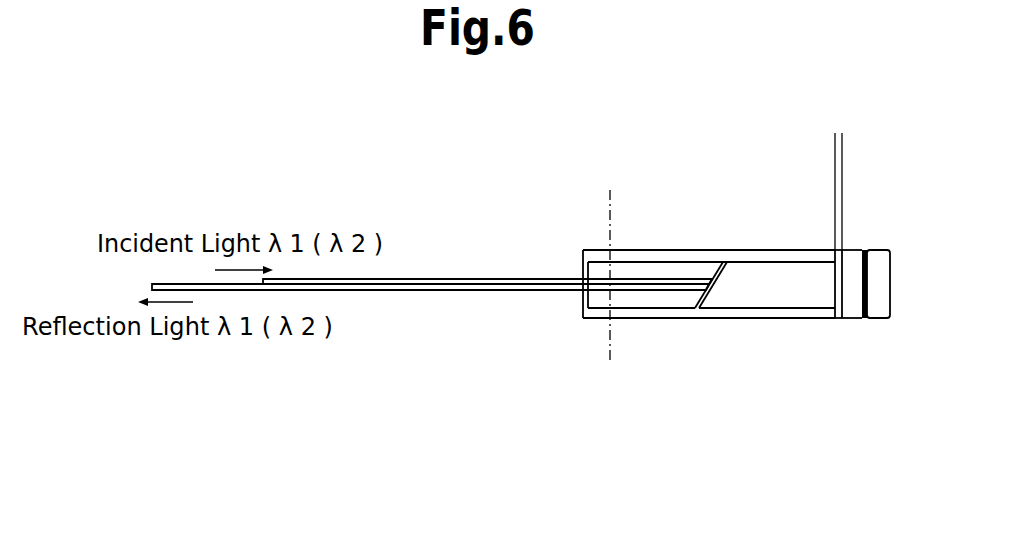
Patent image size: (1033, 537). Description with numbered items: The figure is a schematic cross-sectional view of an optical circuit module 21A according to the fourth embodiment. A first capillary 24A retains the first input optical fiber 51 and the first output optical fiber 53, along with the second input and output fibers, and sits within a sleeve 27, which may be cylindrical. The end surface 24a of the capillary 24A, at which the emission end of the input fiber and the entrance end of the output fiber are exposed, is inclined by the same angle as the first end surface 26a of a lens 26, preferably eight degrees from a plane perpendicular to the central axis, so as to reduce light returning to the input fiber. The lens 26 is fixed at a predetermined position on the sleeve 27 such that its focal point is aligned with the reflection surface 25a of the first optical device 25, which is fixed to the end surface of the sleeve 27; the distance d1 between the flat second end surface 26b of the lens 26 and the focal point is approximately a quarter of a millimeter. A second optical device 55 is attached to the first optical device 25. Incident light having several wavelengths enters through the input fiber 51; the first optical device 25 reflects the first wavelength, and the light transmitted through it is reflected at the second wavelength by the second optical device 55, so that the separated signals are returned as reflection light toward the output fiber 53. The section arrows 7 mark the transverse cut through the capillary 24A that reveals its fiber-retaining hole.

The optical circuit module 21A is at (733, 226).
The first capillary 24A is at (677, 267).
The end surface of the capillary 24a is at (727, 277).
The lens 26 is at (793, 300).
The first end surface of the lens 26a is at (693, 305).
The second end surface of the lens 26b is at (838, 260).
The sleeve 27 is at (685, 315).
The first optical device 25 is at (857, 315).
The reflection surface 25a is at (832, 300).
The second optical device 55 is at (880, 258).
The first input optical fiber 51 is at (472, 277).
The first output optical fiber 53 is at (430, 293).
The distance between the second end surface of the lens and the focal point d1 is at (805, 140).
The section line VII-VII 7 is at (610, 190).